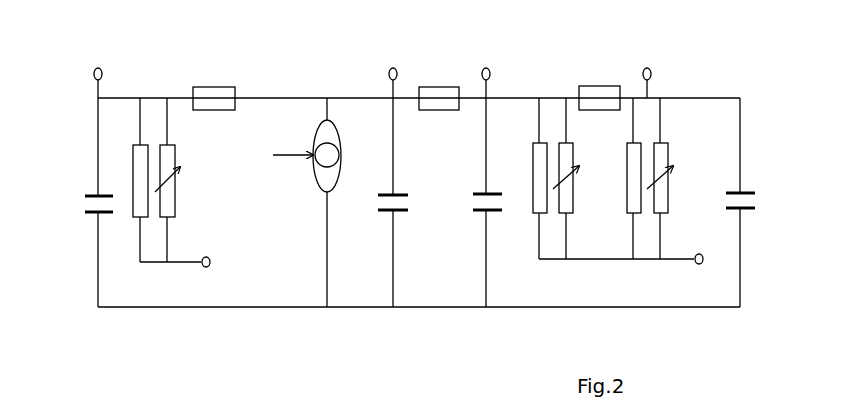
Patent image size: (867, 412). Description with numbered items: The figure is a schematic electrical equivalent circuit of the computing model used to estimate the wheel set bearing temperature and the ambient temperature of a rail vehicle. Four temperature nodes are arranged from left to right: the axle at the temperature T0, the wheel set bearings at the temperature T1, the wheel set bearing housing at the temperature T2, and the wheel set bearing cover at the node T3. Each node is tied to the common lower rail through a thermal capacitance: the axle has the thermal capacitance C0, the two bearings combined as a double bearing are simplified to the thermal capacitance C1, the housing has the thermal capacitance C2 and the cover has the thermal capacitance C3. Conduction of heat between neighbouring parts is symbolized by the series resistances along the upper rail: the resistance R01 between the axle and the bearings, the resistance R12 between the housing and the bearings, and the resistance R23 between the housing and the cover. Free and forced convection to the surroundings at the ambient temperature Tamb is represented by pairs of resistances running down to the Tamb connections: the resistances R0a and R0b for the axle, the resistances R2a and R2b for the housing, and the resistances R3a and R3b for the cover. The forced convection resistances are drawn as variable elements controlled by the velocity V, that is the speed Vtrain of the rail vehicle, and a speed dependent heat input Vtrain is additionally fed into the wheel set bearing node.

The axle temperature T0 is at (98, 60).
The wheel set bearing temperature T1 is at (392, 60).
The wheel set bearing housing temperature T2 is at (485, 60).
The temperature node T3 is at (646, 60).
The ambient temperature Tamb is at (438, 261).
The thermal capacitance of the axle C0 is at (103, 218).
The thermal capacitance of the wheel set bearings C1 is at (397, 217).
The thermal capacitance of the wheel set bearing housing C2 is at (491, 217).
The thermal capacitance of the wheel set bearing cover C3 is at (745, 216).
The conduction resistance between axle and wheel set bearing R01 is at (214, 89).
The conduction resistance between housing and wheel set bearings R12 is at (439, 89).
The conduction resistance between housing and bearing cover R23 is at (599, 89).
The free convection resistance of the axle R0a is at (134, 180).
The forced convection resistance of the axle R0b is at (161, 180).
The free convection resistance of the housing R2a is at (534, 178).
The forced convection resistance of the housing R2b is at (560, 178).
The free convection resistance of the bearing cover R3a is at (628, 178).
The forced convection resistance of the bearing cover R3b is at (655, 178).
The velocity V is at (174, 177).
The velocity of the rail vehicle Vtrain is at (486, 202).